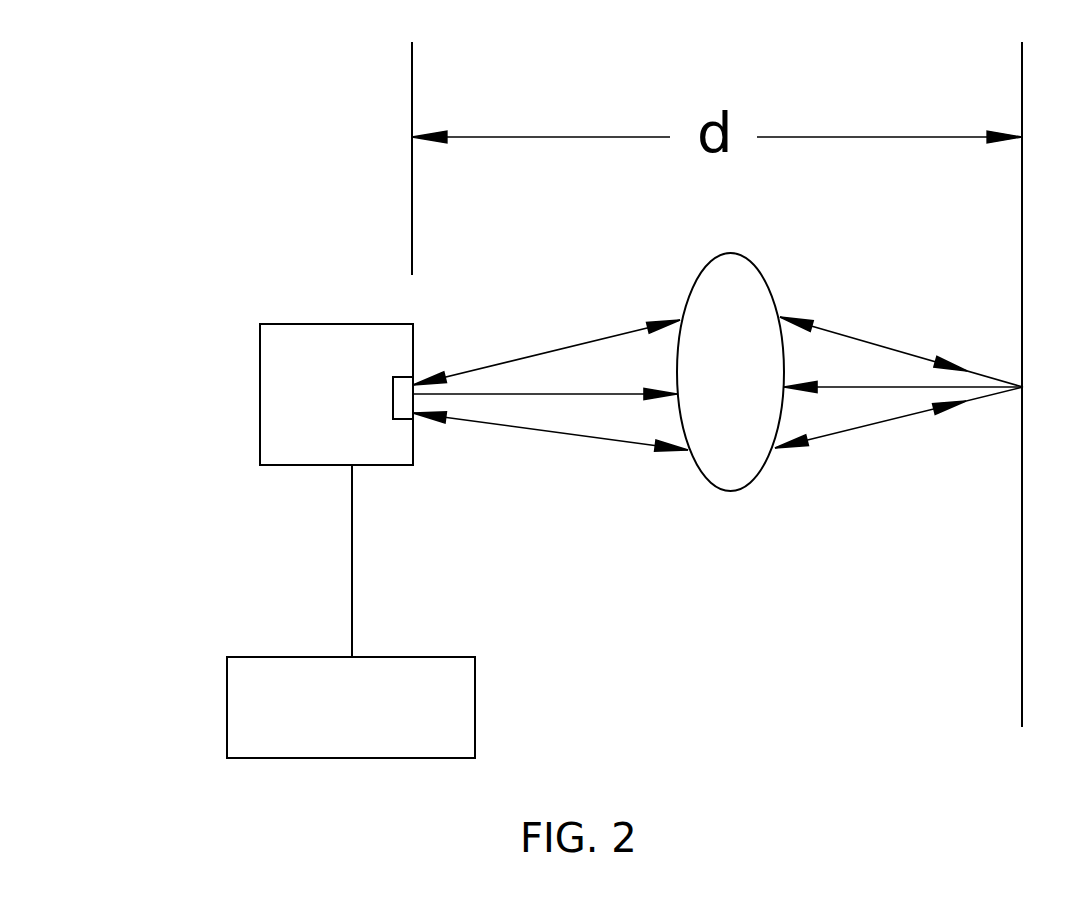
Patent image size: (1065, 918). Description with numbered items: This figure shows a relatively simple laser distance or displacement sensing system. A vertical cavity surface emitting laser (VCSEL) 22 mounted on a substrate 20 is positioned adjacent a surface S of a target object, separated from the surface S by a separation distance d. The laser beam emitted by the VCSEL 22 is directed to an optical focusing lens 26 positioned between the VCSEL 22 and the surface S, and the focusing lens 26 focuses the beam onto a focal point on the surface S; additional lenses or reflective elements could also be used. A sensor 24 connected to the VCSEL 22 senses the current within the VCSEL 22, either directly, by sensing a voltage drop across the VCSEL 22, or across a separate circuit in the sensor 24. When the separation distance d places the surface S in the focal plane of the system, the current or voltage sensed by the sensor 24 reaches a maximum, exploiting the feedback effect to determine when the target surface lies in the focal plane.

The substrate 20 is at (300, 350).
The vertical cavity surface emitting laser 22 is at (393, 377).
The sensor 24 is at (262, 702).
The optical focusing lens 26 is at (715, 453).
The surface S is at (1022, 677).